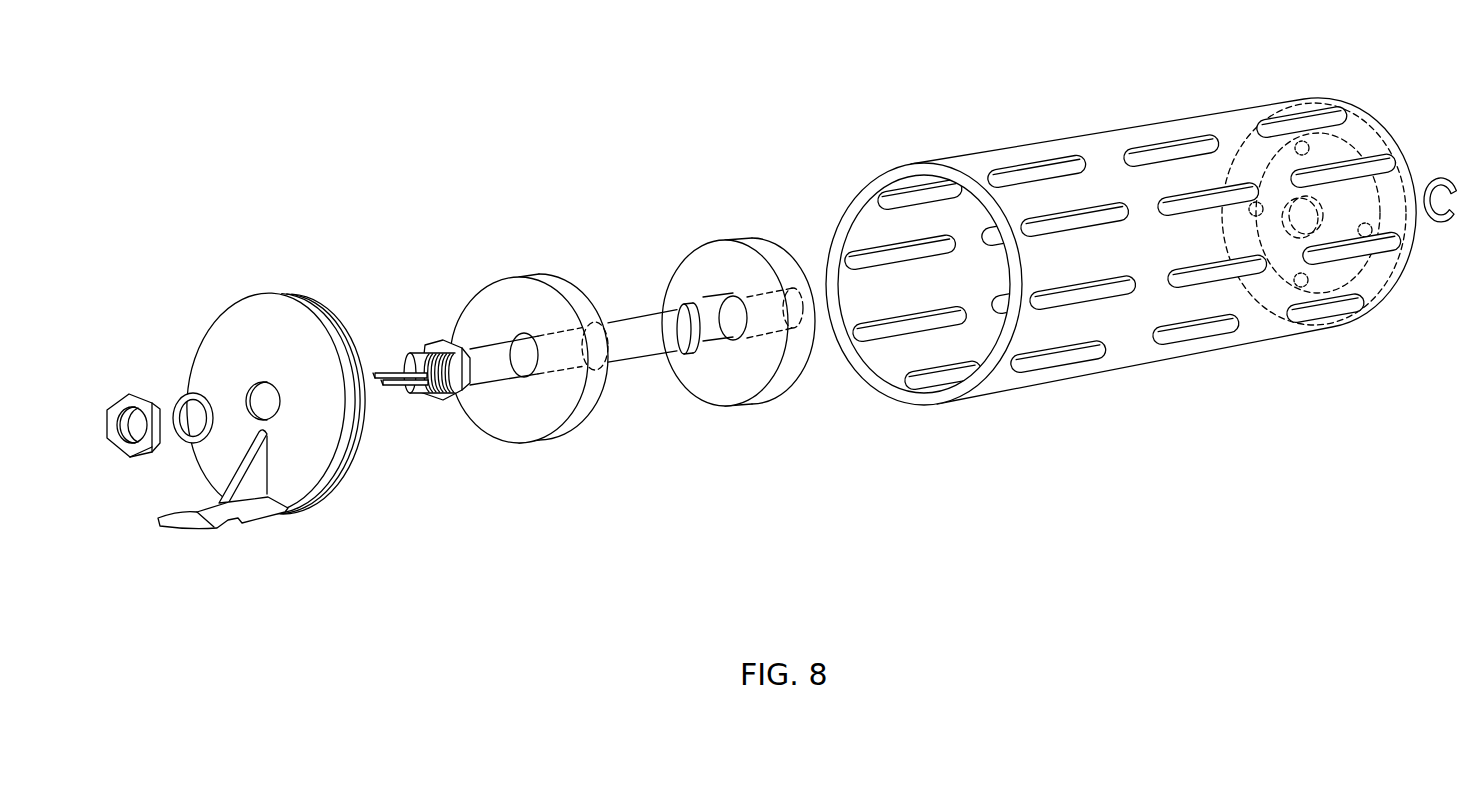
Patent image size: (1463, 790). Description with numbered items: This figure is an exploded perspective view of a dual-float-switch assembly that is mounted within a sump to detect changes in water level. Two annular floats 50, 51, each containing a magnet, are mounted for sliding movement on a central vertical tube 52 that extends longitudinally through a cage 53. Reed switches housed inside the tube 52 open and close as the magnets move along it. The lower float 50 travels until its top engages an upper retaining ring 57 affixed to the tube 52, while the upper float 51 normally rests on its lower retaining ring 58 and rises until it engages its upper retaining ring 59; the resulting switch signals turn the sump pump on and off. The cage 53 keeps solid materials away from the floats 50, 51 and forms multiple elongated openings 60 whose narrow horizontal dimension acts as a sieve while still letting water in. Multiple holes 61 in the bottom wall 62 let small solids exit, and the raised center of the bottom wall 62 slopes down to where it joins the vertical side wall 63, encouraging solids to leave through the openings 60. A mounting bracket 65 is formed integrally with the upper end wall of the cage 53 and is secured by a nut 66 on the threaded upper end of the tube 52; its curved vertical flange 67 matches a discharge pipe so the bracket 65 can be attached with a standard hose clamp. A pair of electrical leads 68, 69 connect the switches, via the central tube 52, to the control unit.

The lower annular float 50 is at (755, 245).
The upper annular float 51 is at (553, 286).
The central vertical tube 52 is at (618, 326).
The cage 53 is at (1121, 242).
The upper retaining ring 57 is at (682, 306).
The lower retaining ring 58 is at (594, 312).
The upper retaining ring 59 is at (450, 343).
The elongated openings 60 is at (1137, 149).
The holes 61 is at (1366, 233).
The bottom wall 62 is at (1367, 118).
The vertical side wall 63 is at (1258, 330).
The mounting bracket 65 is at (272, 517).
The nut 66 is at (137, 396).
The vertical flange 67 is at (197, 522).
The electrical lead 68 is at (395, 374).
The electrical lead 69 is at (399, 388).